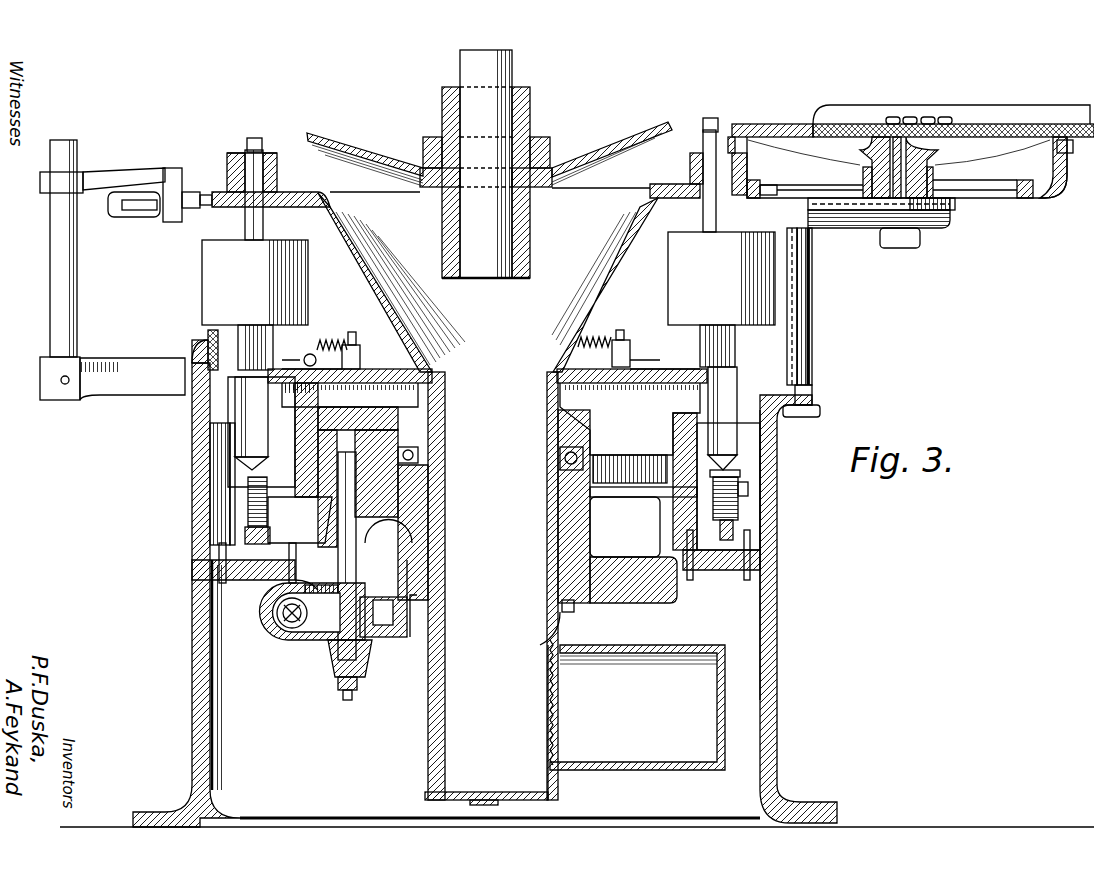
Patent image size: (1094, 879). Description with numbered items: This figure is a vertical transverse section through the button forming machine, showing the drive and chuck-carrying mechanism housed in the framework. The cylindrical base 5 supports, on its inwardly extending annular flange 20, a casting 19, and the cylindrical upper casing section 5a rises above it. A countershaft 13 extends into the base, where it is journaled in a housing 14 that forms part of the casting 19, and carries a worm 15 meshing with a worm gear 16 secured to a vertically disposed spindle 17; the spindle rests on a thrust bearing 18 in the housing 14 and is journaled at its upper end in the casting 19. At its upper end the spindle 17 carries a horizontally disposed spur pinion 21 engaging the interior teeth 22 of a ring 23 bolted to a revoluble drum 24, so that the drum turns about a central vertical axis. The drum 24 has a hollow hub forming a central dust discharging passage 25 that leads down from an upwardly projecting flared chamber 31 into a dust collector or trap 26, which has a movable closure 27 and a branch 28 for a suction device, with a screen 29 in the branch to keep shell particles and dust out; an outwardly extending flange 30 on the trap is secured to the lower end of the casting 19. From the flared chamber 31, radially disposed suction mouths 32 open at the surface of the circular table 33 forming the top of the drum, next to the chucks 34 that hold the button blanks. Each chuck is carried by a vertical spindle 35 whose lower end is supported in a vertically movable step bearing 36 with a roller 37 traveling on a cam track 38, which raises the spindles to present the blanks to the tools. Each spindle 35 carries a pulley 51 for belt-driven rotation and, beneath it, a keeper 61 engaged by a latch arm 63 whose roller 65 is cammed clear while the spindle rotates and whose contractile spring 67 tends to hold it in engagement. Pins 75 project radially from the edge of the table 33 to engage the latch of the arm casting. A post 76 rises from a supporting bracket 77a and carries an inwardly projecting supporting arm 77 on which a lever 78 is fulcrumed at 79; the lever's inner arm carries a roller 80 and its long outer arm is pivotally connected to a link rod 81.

The cylindrical base 5 is at (192, 695).
The cylindrical upper casing section 5a is at (778, 500).
The countershaft 13 is at (280, 640).
The housing 14 is at (328, 645).
The worm 15 is at (288, 645).
The worm gear 16 is at (390, 637).
The spindle 17 is at (356, 568).
The thrust bearing 18 is at (350, 700).
The casting 19 is at (445, 500).
The annular flange 20 is at (495, 513).
The spur pinion 21 is at (420, 470).
The interior teeth 22 is at (628, 450).
The ring 23 is at (352, 440).
The revoluble drum 24 is at (328, 341).
The dust discharging passage 25 is at (493, 586).
The dust collector or trap 26 is at (486, 767).
The movable closure 27 is at (484, 792).
The branch 28 is at (643, 762).
The screen 29 is at (553, 712).
The outwardly extending flange 30 is at (576, 612).
The flared chamber 31 is at (456, 211).
The suction mouths 32 is at (388, 162).
The circular table 33 is at (287, 187).
The chucks 34 is at (262, 148).
The spindles 35 is at (265, 222).
The step bearings 36 is at (248, 495).
The rollers 37 is at (270, 530).
The cam track 38 is at (648, 540).
The pulley 51 is at (488, 278).
The keeper 61 is at (280, 332).
The latch arms 63 is at (360, 363).
The rollers 65 is at (205, 345).
The contractile springs 67 is at (600, 338).
The pins 75 is at (913, 261).
The post 76 is at (78, 340).
The supporting arm 77 is at (115, 176).
The supporting bracket 77a is at (122, 396).
The lever 78 is at (145, 212).
The fulcrum 79 is at (178, 170).
The roller 80 is at (195, 192).
The link rod 81 is at (120, 218).